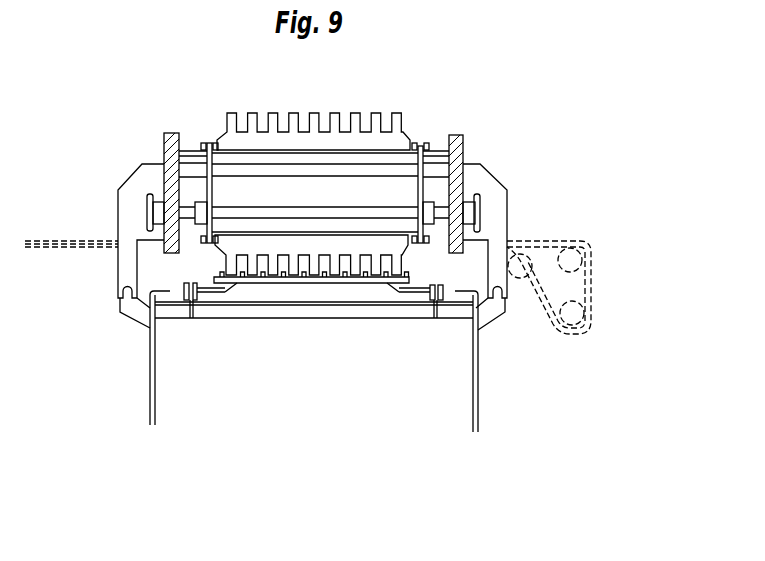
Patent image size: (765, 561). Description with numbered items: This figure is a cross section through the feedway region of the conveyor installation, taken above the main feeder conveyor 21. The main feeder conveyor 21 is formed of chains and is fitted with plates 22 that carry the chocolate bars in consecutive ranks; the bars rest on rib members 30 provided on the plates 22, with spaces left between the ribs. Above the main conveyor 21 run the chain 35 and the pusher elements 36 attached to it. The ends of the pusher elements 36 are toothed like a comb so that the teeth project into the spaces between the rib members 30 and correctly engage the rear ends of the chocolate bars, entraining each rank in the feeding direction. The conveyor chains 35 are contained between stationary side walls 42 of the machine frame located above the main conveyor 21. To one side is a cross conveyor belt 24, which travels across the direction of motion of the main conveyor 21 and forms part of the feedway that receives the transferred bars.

The main feeder conveyor 21 is at (190, 302).
The plates 22 is at (295, 280).
The cross conveyor belts 24 is at (547, 243).
The rib members 30 is at (365, 277).
The chain 35 is at (207, 187).
The pusher elements 36 is at (270, 142).
The stationary side walls 42 is at (166, 190).